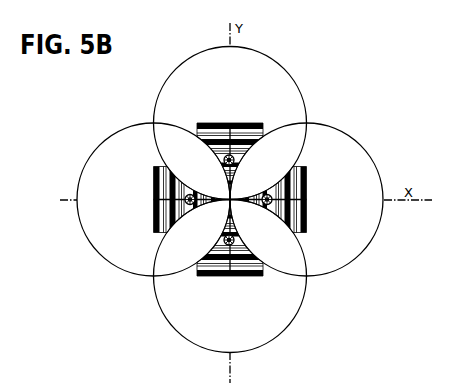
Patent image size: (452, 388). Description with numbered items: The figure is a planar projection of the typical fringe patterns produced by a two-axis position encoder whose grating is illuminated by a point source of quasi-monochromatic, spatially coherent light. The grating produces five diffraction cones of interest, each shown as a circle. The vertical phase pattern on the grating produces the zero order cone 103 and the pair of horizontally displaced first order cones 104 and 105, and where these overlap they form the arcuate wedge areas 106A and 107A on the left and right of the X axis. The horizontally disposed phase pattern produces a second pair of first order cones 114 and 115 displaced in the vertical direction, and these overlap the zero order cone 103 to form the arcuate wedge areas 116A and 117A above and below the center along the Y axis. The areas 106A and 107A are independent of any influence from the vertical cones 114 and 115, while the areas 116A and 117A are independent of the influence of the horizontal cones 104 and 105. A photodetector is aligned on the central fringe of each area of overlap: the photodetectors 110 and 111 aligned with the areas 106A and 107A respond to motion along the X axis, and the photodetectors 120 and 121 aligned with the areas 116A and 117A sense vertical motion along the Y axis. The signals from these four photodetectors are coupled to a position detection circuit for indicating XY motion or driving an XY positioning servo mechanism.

The zero order cone 103 is at (212, 277).
The first order cone 104 is at (83, 168).
The first order cone 105 is at (373, 166).
The arcuate wedge area 106A is at (160, 228).
The arcuate wedge area 107A is at (303, 188).
The photodetector 110 is at (160, 203).
The photodetector 111 is at (269, 203).
The first order cone 114 is at (303, 111).
The first order cone 115 is at (280, 333).
The arcuate wedge area 116A is at (260, 127).
The arcuate wedge area 117A is at (245, 277).
The photodetector 120 is at (228, 155).
The photodetector 121 is at (223, 240).